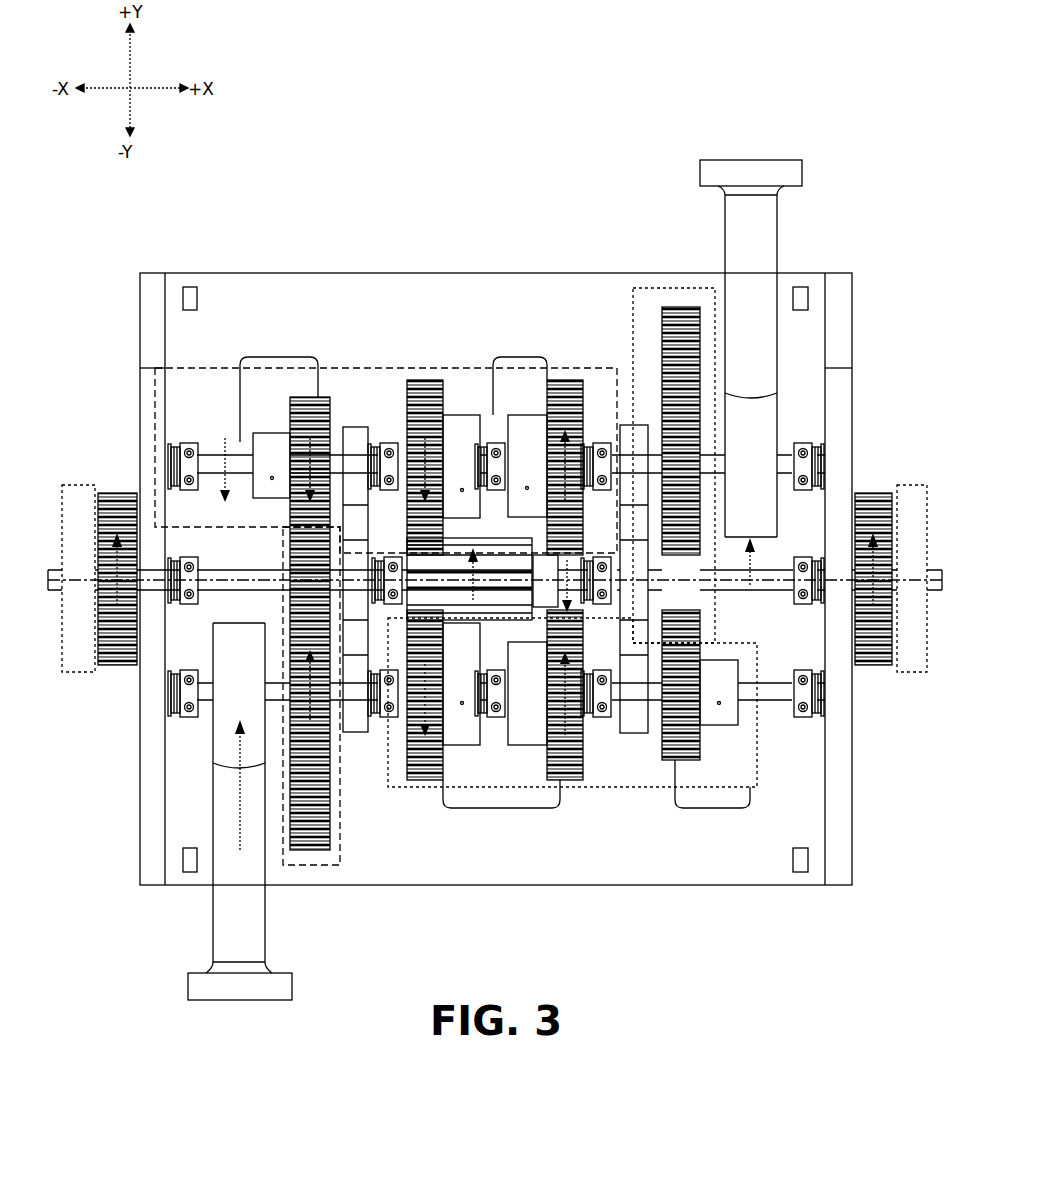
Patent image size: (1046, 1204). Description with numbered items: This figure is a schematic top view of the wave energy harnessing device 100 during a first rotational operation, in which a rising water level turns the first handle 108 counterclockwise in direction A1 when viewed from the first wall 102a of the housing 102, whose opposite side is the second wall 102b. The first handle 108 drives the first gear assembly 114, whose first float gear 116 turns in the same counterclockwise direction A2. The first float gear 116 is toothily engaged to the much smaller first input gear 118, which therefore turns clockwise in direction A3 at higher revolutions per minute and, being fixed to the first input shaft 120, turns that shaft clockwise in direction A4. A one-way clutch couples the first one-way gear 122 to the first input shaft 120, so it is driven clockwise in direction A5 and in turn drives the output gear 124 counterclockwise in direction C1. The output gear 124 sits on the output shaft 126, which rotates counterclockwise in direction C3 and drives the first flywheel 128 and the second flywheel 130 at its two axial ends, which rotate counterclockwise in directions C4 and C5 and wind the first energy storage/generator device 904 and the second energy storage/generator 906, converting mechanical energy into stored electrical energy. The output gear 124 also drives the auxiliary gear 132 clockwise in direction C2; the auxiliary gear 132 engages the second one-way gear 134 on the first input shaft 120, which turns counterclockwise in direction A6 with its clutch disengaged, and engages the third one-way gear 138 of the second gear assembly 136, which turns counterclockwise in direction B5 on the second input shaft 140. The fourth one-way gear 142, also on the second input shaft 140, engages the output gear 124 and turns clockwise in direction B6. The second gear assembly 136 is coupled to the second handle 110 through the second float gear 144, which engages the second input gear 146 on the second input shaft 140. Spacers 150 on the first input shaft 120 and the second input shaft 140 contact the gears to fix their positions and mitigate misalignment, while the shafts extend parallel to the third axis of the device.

The wave energy harnessing device 100 is at (352, 118).
The housing 102 is at (192, 266).
The first wall 102a is at (152, 367).
The second wall 102b is at (860, 367).
The first handle 108 is at (240, 1003).
The second handle 110 is at (752, 160).
The first gear assembly 114 is at (358, 362).
The first float gear 116 is at (318, 852).
The first input gear 118 is at (308, 395).
The first input shaft 120 is at (205, 462).
The first one-way gear 122 is at (424, 380).
The output gear 124 is at (478, 448).
The output shaft 126 is at (772, 592).
The first flywheel 128 is at (873, 492).
The second flywheel 130 is at (110, 492).
The auxiliary gear 132 is at (565, 585).
The second one-way gear 134 is at (565, 380).
The second gear assembly 136 is at (695, 280).
The third one-way gear 138 is at (570, 782).
The second input shaft 140 is at (775, 702).
The fourth one-way gear 142 is at (425, 782).
The second float gear 144 is at (676, 305).
The second input gear 146 is at (690, 762).
The spacers 150 is at (268, 432).
The first energy storage/generator device 904 is at (927, 674).
The second energy storage/generator 906 is at (62, 672).
The counterclockwise direction A1 is at (240, 790).
The counterclockwise direction A2 is at (315, 720).
The clockwise direction A3 is at (313, 440).
The clockwise direction A4 is at (228, 438).
The clockwise direction A5 is at (422, 440).
The counterclockwise direction A6 is at (560, 442).
The counterclockwise direction B5 is at (575, 716).
The clockwise direction B6 is at (455, 716).
The counterclockwise direction C1 is at (478, 598).
The clockwise direction C2 is at (565, 556).
The counterclockwise direction C3 is at (752, 585).
The counterclockwise direction C4 is at (880, 552).
The counterclockwise direction C5 is at (117, 606).